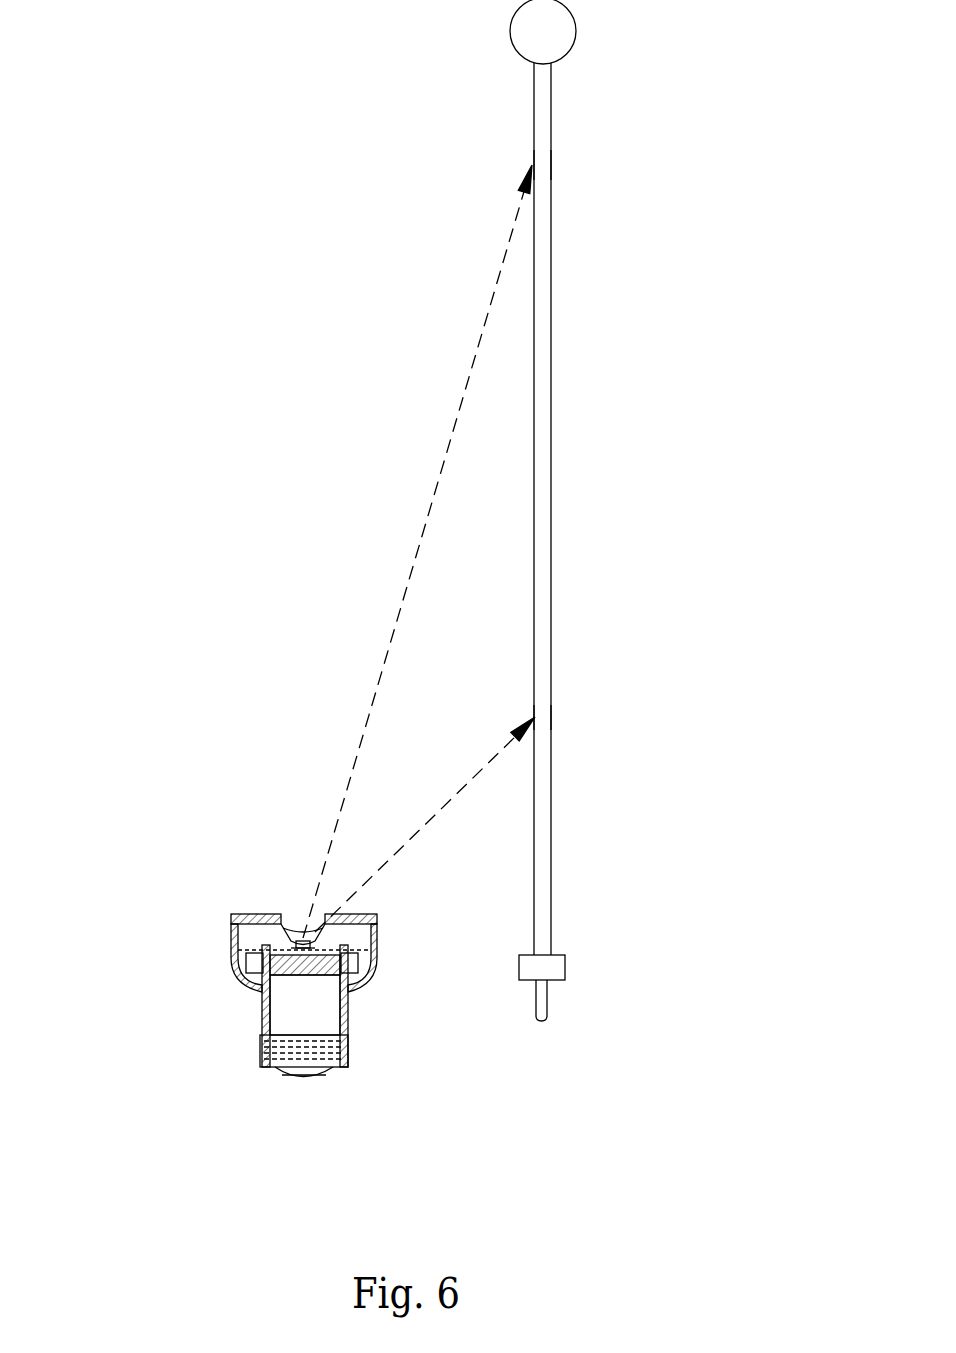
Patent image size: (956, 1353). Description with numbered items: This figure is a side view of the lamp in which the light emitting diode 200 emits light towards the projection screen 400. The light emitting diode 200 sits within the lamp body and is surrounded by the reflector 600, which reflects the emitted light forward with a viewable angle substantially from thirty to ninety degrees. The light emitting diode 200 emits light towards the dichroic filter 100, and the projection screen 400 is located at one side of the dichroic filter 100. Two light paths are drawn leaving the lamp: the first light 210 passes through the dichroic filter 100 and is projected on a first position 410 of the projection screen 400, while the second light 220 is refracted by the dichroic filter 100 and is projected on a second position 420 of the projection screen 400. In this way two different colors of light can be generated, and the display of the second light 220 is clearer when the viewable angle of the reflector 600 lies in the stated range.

The dichroic filter 100 is at (295, 918).
The light emitting diode 200 is at (298, 928).
The first light 210 is at (420, 542).
The second light 220 is at (413, 833).
The projection screen 400 is at (543, 491).
The first position 410 is at (530, 160).
The second position 420 is at (540, 717).
The reflector 600 is at (320, 932).